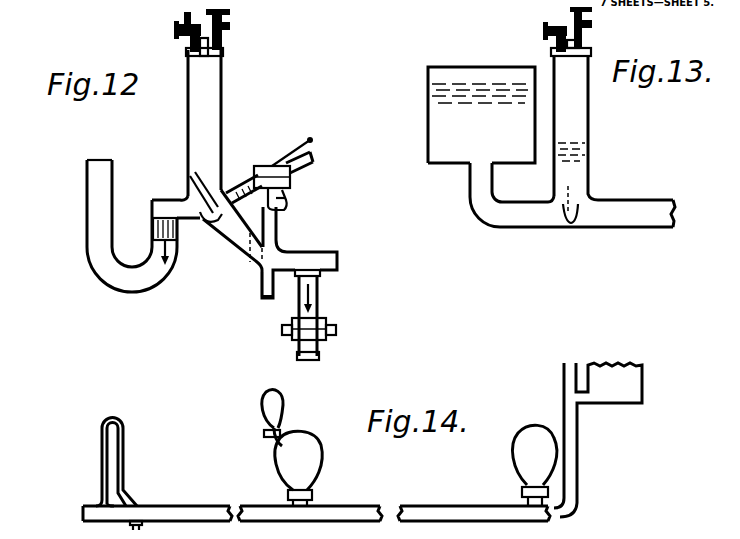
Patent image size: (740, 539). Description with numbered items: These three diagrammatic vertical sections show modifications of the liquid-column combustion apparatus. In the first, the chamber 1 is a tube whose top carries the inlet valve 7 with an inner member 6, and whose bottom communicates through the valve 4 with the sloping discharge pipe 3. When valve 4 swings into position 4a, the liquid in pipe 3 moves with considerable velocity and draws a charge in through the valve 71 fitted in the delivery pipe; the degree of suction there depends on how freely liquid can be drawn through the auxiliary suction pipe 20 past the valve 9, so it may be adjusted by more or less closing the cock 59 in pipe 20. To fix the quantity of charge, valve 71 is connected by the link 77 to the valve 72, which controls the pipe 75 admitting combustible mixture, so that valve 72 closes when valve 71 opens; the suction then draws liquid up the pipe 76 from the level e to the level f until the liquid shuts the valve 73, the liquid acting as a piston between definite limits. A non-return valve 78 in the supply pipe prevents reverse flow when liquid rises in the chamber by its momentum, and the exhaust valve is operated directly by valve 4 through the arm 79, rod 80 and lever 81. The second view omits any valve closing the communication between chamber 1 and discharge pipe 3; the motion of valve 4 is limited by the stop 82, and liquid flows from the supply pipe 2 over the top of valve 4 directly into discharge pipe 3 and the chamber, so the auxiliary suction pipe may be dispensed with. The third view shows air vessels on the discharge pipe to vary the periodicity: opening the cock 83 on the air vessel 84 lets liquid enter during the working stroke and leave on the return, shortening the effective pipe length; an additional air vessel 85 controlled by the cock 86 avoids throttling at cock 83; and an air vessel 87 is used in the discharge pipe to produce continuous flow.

In FIG. 12, the chamber 1 is at (212, 128).
In FIG. 13, the chamber 1 is at (577, 118).
In FIG. 13, the supply pipe 2 is at (531, 216).
In FIG. 12, the discharge pipe 3 is at (244, 226).
In FIG. 13, the discharge pipe 3 is at (636, 214).
In FIG. 12, the valve 4 is at (178, 198).
In FIG. 13, the valve 4 is at (559, 224).
In FIG. 12, the position of valve 4 4a is at (203, 181).
In FIG. 12, the inner tube 6 is at (202, 63).
In FIG. 12, the inlet valve 7 is at (220, 47).
In FIG. 12, the valve 9 is at (304, 270).
In FIG. 12, the auxiliary suction pipe 20 is at (320, 356).
In FIG. 12, the cock 59 is at (320, 314).
In FIG. 12, the valve 71 is at (232, 190).
In FIG. 12, the valve 72 is at (291, 182).
In FIG. 12, the valve 73 is at (278, 210).
In FIG. 12, the pipe 75 is at (314, 160).
In FIG. 12, the pipe 76 is at (262, 275).
In FIG. 12, the link 77 is at (284, 163).
In FIG. 12, the non-return valve 78 is at (160, 203).
In FIG. 12, the arm 79 is at (205, 224).
In FIG. 12, the rod 80 is at (186, 45).
In FIG. 12, the lever 81 is at (188, 27).
In FIG. 13, the stop 82 is at (576, 192).
In FIG. 14, the cock 83 is at (312, 494).
In FIG. 14, the air vessel 84 is at (313, 452).
In FIG. 14, the additional air vessel 85 is at (284, 405).
In FIG. 14, the cock 86 is at (264, 438).
In FIG. 14, the air vessel 87 is at (538, 437).
In FIG. 12, the liquid level e is at (261, 290).
In FIG. 12, the liquid level f is at (286, 202).